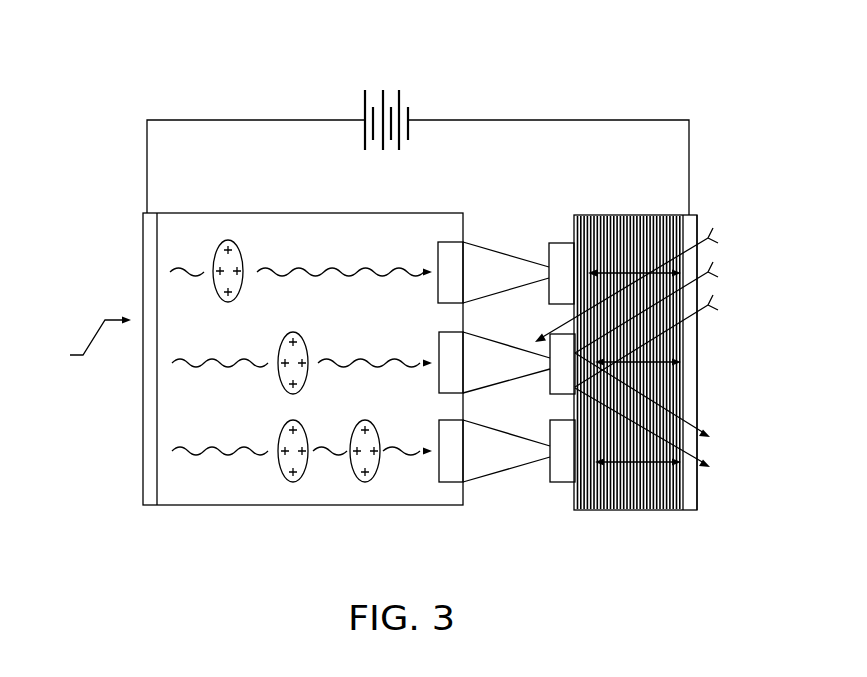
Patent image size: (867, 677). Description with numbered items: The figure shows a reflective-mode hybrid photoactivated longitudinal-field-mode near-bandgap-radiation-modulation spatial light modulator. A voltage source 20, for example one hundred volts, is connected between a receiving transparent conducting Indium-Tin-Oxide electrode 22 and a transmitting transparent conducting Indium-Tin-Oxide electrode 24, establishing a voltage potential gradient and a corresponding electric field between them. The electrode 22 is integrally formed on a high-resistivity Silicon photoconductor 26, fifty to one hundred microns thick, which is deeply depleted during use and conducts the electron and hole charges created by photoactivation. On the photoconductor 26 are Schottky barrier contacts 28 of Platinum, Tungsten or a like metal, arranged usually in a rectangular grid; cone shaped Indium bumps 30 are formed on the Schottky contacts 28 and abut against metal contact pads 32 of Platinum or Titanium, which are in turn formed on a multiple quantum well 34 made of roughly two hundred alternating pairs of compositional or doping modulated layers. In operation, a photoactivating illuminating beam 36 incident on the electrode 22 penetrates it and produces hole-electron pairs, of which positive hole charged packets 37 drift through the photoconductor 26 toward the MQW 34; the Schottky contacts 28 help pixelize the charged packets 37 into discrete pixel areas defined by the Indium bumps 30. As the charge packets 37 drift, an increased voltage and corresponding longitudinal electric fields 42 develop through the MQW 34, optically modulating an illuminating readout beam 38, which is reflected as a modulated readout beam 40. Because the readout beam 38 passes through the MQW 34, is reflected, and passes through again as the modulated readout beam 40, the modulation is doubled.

The voltage source 20 is at (363, 115).
The receiving transparent conducting Indium-Tin-Oxide electrode 22 is at (153, 507).
The transmitting transparent conducting Indium-Tin-Oxide electrode 24 is at (695, 510).
The high-resistivity Silicon photoconductor 26 is at (277, 188).
The Schottky barrier contacts 28 is at (455, 242).
The cone shaped Indium bumps 30 is at (488, 247).
The metal contact pads 32 is at (560, 243).
The multiple quantum well 34 is at (623, 215).
The photoactivating illuminating beam 36 is at (83, 344).
The positive hole charged packets 37 is at (218, 255).
The illuminating readout beam 38 is at (706, 276).
The modulated readout beam 40 is at (698, 430).
The longitudinal electric fields 42 is at (627, 465).